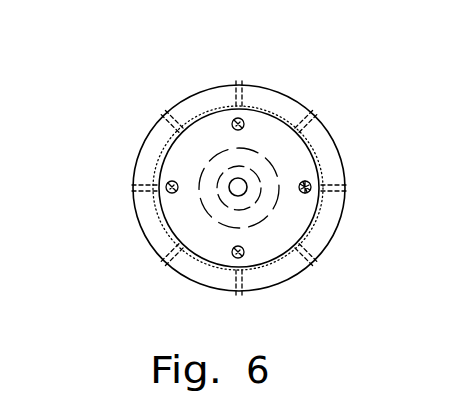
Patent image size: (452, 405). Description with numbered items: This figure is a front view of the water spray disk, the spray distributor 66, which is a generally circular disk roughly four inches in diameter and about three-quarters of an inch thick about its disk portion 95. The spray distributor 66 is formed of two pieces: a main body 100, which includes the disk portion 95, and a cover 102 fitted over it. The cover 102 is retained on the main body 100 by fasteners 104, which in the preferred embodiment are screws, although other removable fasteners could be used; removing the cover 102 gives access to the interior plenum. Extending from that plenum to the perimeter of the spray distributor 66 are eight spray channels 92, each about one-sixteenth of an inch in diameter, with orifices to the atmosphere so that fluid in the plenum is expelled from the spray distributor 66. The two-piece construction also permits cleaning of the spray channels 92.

The spray distributor 66 is at (218, 148).
The spray channels 92 is at (243, 190).
The disk portion 95 is at (373, 264).
The main body 100 is at (294, 182).
The cover 102 is at (296, 188).
The fasteners 104 is at (243, 186).